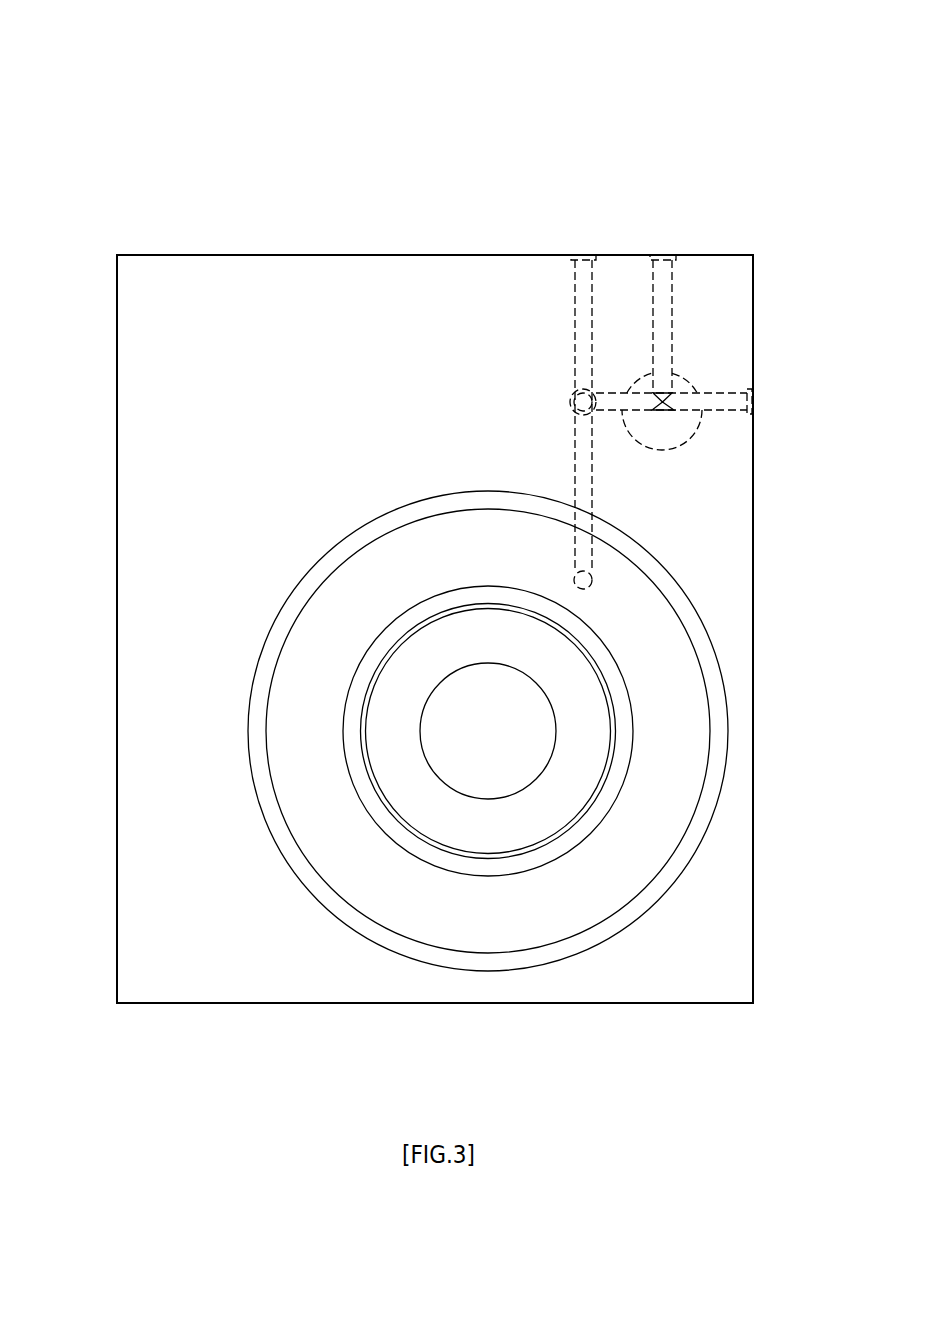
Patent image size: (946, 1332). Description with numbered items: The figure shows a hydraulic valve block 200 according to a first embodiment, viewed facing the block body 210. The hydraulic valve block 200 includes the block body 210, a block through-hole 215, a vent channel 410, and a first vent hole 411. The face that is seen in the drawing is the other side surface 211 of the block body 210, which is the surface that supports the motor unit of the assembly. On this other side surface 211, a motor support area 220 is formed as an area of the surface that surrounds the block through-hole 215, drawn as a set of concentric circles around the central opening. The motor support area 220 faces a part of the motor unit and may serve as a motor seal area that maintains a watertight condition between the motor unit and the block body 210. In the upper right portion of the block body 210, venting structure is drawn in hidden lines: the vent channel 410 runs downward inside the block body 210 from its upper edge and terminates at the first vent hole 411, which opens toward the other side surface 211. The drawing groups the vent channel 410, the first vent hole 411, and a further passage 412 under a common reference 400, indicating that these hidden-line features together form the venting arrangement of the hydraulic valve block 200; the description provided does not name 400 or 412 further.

The hydraulic valve block 200 is at (189, 53).
The block body 210 is at (349, 245).
The other side surface 211 is at (172, 528).
The block through-hole 215 is at (514, 717).
The motor support area 220 is at (647, 817).
The fluid supply line assembly 400 is at (711, 674).
The vent channel 410 is at (580, 483).
The first vent hole 411 is at (592, 578).
The second supply pipe with valve 412 is at (661, 352).